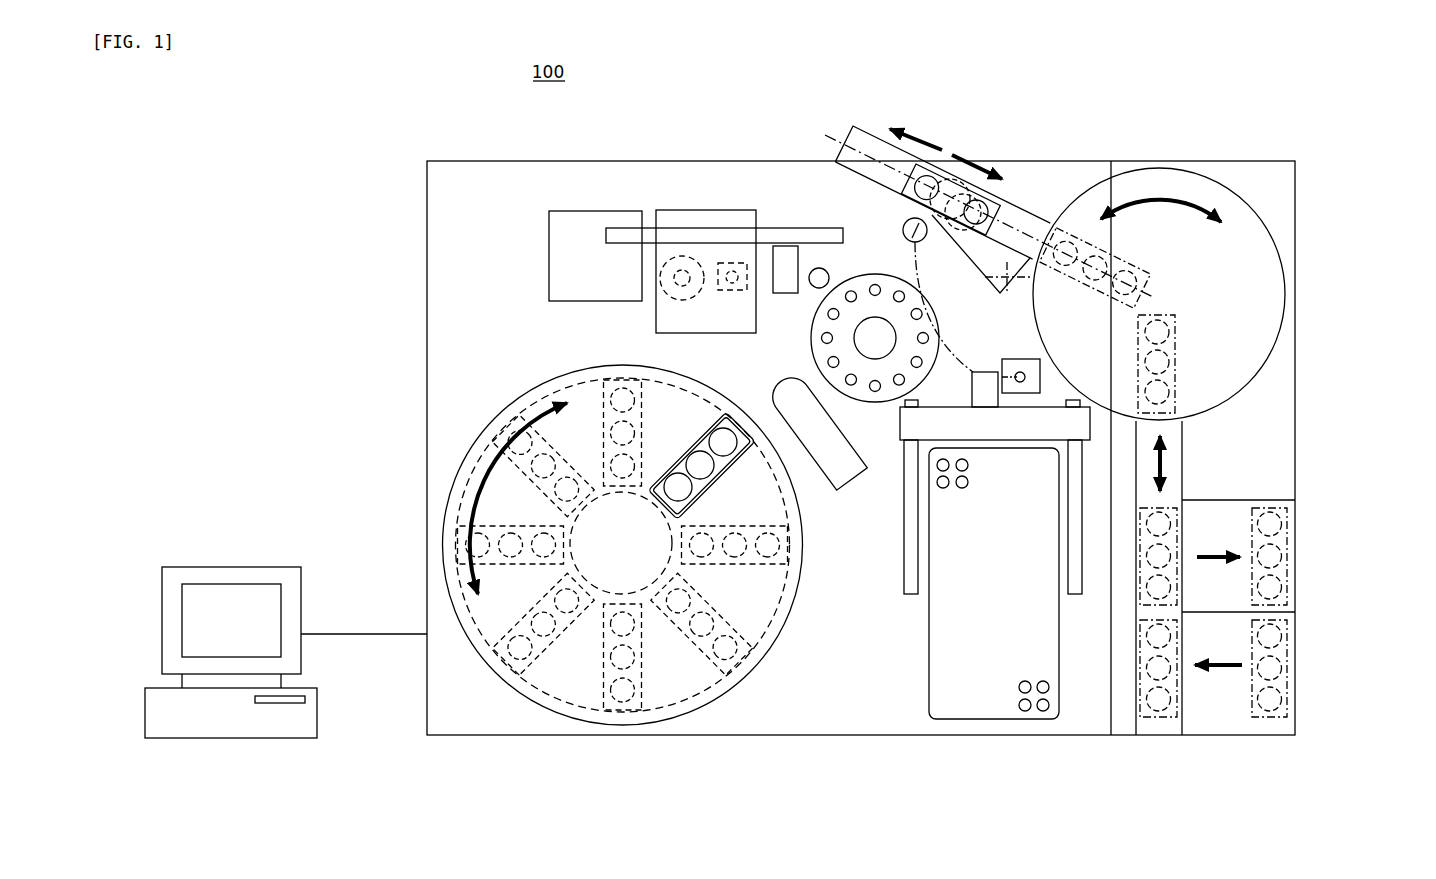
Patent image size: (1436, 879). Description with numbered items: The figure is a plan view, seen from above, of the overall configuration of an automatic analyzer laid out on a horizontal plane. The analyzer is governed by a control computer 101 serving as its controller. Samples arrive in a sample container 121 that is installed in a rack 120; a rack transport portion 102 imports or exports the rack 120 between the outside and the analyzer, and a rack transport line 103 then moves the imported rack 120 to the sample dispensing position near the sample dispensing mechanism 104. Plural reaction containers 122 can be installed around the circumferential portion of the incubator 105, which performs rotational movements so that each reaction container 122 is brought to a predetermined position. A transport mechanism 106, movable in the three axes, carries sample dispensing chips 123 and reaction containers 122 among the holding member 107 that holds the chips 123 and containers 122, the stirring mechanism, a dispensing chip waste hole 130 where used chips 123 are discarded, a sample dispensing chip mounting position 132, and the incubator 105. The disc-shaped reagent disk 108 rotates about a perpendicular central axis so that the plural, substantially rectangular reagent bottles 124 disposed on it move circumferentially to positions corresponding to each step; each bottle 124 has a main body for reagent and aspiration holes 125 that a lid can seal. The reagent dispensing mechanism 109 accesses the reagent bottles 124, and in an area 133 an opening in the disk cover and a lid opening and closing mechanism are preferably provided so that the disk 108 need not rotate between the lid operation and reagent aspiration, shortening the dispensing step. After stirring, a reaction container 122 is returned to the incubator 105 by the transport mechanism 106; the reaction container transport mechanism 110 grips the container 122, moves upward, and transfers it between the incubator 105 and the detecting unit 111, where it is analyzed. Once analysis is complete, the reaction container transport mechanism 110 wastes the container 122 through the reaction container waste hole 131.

The control computer 101 is at (242, 739).
The rack transport portion 102 is at (1283, 384).
The rack transport line 103 is at (1030, 212).
The sample dispensing mechanism 104 is at (960, 258).
The incubator 105 is at (888, 397).
The transport mechanism 106 is at (1018, 440).
The holding member 107 is at (933, 687).
The reagent disk 108 is at (588, 727).
The reagent dispensing mechanism 109 is at (809, 457).
The reaction container transport mechanism 110 is at (772, 267).
The detecting unit 111 is at (549, 231).
The rack 120 is at (930, 170).
The sample container 121 is at (1000, 218).
The reaction container 122 is at (822, 338).
The sample dispensing chip 123 is at (964, 488).
The reagent bottle 124 is at (677, 486).
The aspiration hole 125 is at (605, 399).
The dispensing chip waste hole 130 is at (910, 233).
The reaction container waste hole 131 is at (818, 267).
The sample dispensing chip mounting position 132 is at (1020, 359).
The area 133 is at (712, 423).